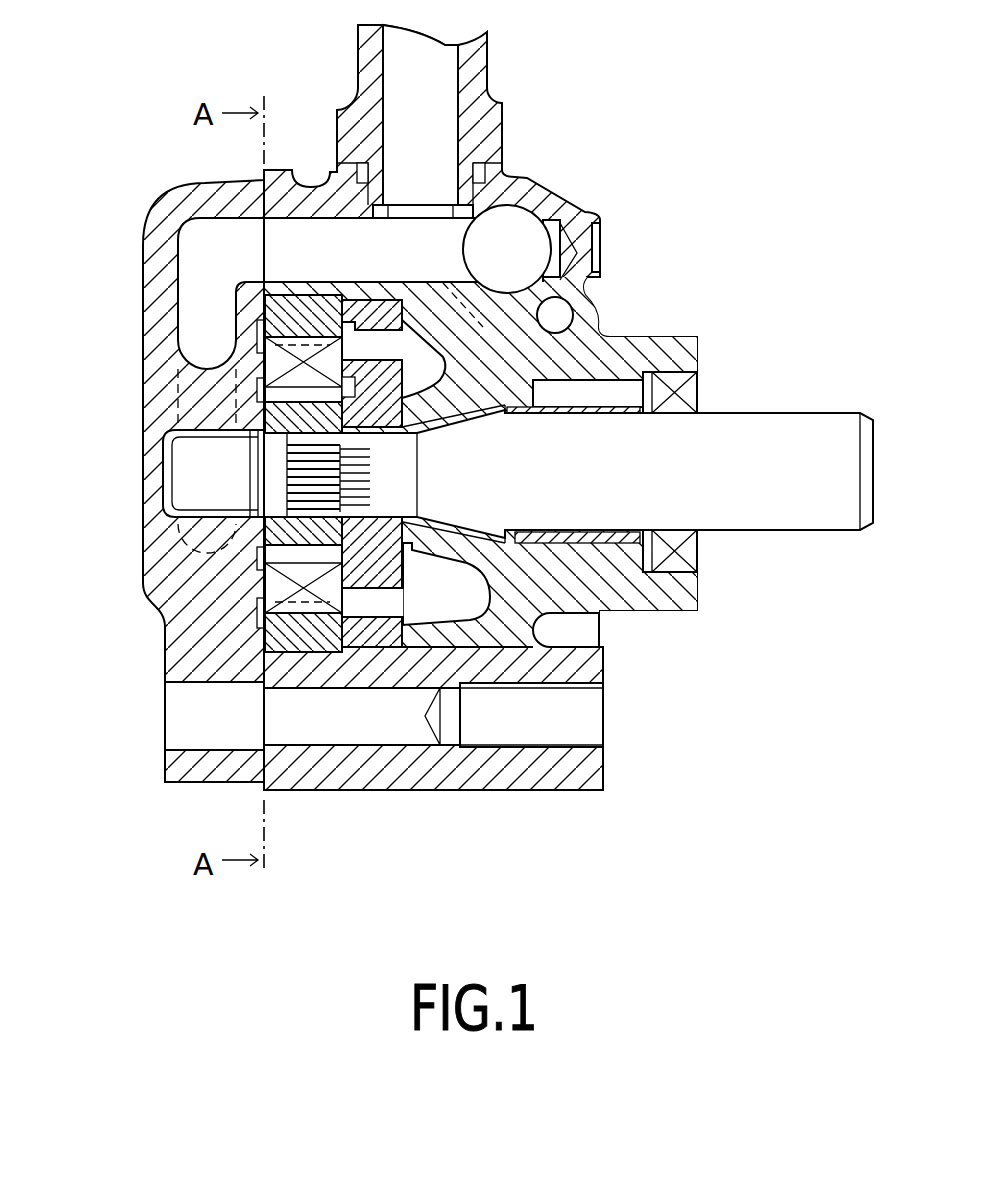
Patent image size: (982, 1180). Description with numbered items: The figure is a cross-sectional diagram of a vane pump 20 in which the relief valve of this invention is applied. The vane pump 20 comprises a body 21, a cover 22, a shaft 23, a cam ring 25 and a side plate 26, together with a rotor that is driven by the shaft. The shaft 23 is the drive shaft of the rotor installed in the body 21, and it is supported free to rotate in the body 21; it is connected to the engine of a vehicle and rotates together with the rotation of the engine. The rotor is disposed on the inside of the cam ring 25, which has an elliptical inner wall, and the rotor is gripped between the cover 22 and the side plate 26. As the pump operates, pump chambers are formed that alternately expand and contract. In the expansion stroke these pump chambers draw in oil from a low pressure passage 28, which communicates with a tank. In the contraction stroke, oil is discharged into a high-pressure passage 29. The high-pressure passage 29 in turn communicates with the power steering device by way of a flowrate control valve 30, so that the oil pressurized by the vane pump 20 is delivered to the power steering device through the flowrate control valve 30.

The vane pump 20 is at (157, 188).
The body 21 is at (540, 176).
The cover 22 is at (143, 228).
The shaft 23 is at (803, 428).
The cam ring 25 is at (310, 623).
The side plate 26 is at (367, 633).
The low pressure passage 28 is at (325, 232).
The high-pressure passage 29 is at (483, 327).
The flowrate control valve 30 is at (522, 222).